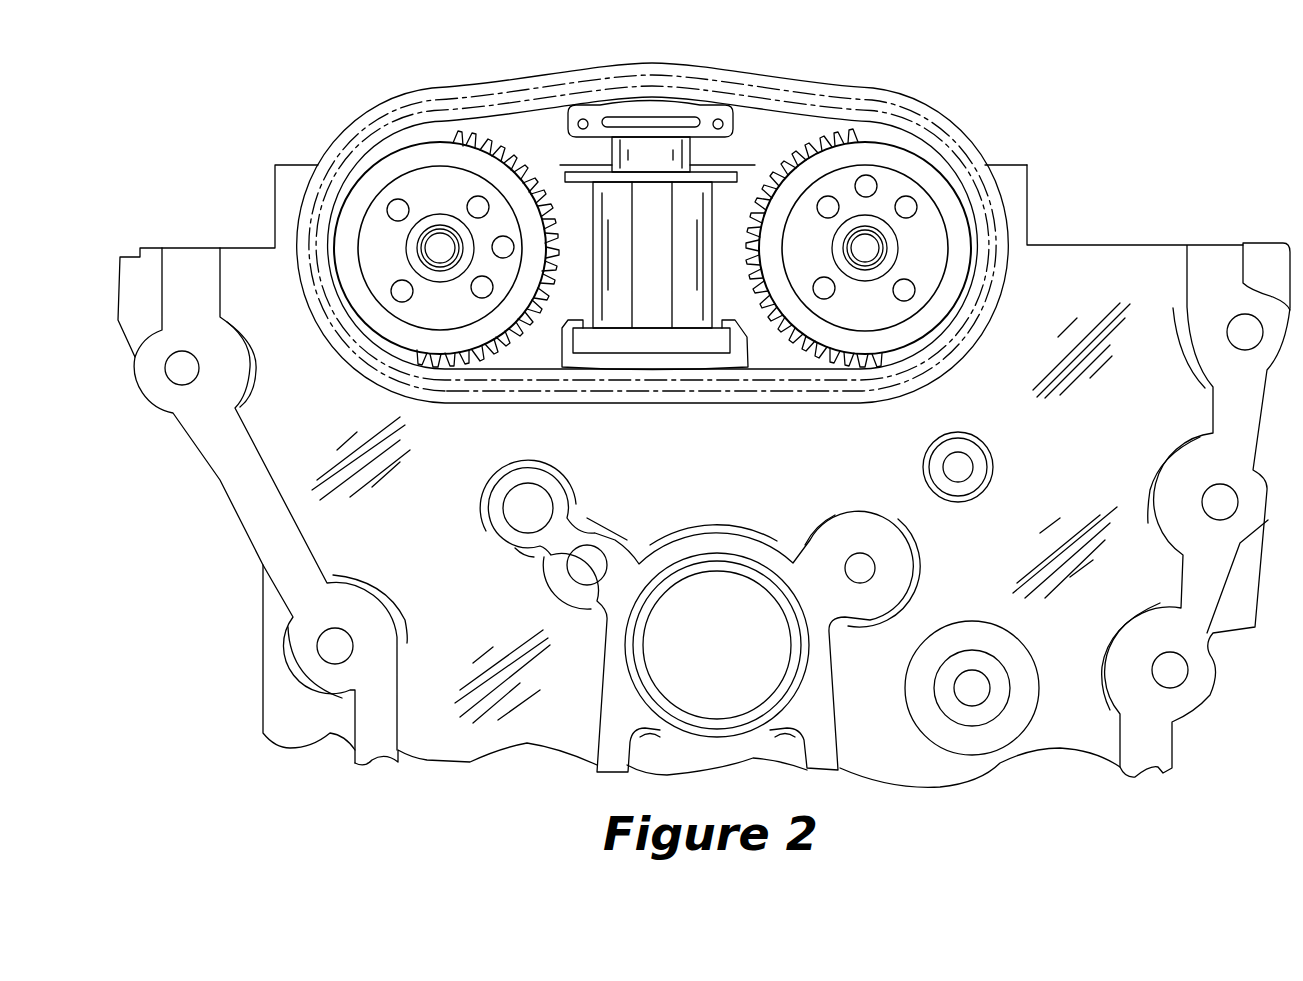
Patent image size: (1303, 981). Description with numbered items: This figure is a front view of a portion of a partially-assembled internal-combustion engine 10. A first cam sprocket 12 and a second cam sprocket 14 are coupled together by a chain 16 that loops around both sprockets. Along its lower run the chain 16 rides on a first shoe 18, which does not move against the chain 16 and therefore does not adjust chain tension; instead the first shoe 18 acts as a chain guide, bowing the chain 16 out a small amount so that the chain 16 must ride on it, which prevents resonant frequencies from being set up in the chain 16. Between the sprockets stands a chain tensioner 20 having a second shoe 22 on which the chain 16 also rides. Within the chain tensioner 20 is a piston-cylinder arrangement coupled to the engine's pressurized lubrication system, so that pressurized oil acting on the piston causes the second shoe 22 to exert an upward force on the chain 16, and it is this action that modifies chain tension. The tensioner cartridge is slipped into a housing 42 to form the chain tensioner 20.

The internal-combustion engine 10 is at (1117, 208).
The first cam sprocket 12 is at (398, 163).
The second cam sprocket 14 is at (883, 160).
The chain 16 is at (775, 97).
The first shoe 18 is at (650, 358).
The chain tensioner 20 is at (696, 173).
The second shoe 22 is at (700, 112).
The housing 42 is at (645, 210).